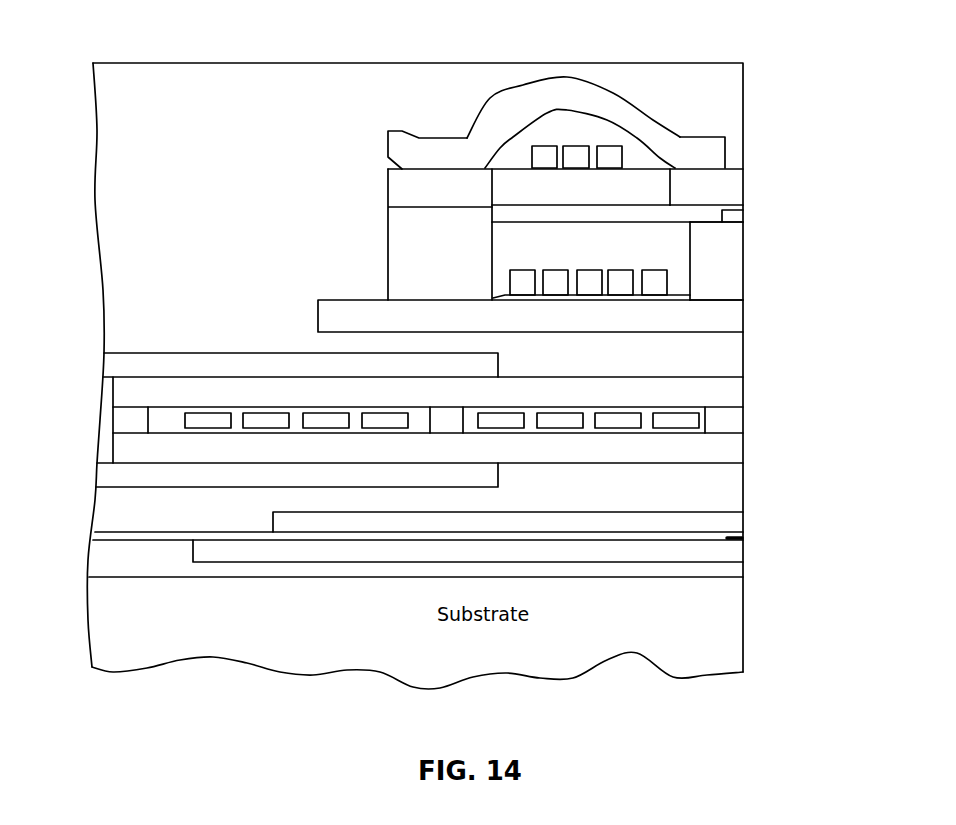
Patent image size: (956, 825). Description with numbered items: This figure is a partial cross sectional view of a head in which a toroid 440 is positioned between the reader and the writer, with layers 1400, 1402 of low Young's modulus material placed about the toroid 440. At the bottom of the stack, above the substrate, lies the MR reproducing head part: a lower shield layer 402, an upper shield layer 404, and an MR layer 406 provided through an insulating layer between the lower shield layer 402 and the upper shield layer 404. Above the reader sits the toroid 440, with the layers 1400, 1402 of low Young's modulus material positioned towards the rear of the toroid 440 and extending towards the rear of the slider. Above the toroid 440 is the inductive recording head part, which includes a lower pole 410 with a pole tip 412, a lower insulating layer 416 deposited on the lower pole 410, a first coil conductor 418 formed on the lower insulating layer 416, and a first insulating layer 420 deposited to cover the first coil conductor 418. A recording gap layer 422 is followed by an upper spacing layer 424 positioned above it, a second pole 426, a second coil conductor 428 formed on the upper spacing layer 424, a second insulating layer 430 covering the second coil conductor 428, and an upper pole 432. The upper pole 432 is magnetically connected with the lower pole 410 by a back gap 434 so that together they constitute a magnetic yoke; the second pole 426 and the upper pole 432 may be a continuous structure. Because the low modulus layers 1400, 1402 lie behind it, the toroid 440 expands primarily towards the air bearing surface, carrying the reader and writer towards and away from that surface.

The lower shield layer 402 is at (743, 552).
The upper shield layer 404 is at (745, 522).
The MR layer 406 is at (745, 538).
The lower pole 410 is at (743, 320).
The P1 pole tip 412 is at (743, 265).
The lower insulating layer 416 is at (680, 297).
The first coil conductor 418 is at (663, 272).
The first insulating layer 420 is at (680, 242).
The recording gap layer 422 is at (708, 210).
The upper spacing layer 424 is at (513, 177).
The second pole 426 is at (743, 180).
The second coil conductor 428 is at (582, 146).
The second insulating layer 430 is at (610, 132).
The upper pole 432 is at (703, 137).
The back gap 434 is at (384, 218).
The toroid 440 is at (743, 378).
The layer of low Young's modulus material 1400 is at (100, 363).
The layer of low Young's modulus material 1402 is at (97, 473).